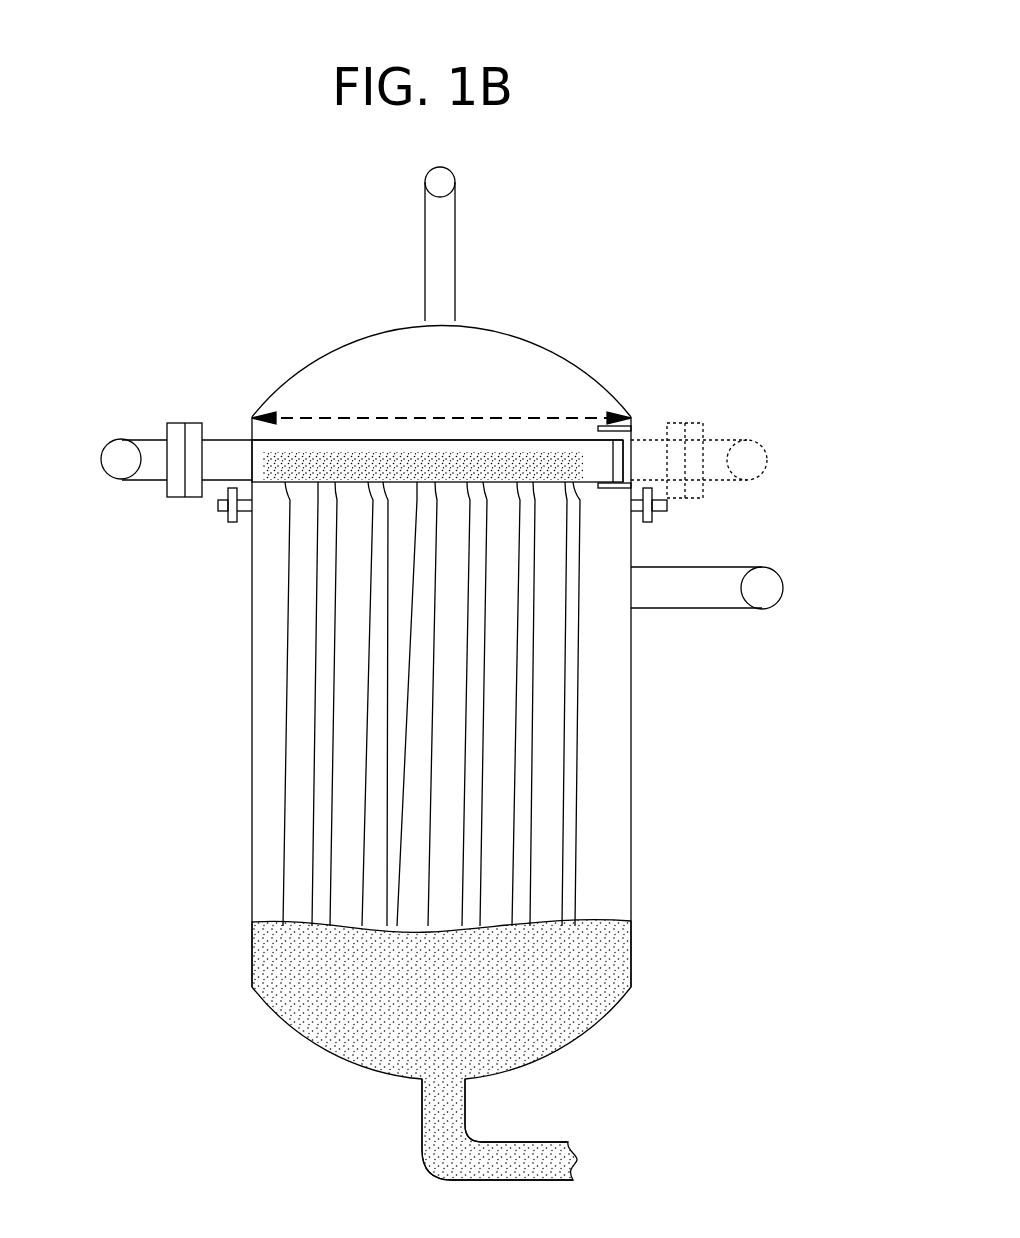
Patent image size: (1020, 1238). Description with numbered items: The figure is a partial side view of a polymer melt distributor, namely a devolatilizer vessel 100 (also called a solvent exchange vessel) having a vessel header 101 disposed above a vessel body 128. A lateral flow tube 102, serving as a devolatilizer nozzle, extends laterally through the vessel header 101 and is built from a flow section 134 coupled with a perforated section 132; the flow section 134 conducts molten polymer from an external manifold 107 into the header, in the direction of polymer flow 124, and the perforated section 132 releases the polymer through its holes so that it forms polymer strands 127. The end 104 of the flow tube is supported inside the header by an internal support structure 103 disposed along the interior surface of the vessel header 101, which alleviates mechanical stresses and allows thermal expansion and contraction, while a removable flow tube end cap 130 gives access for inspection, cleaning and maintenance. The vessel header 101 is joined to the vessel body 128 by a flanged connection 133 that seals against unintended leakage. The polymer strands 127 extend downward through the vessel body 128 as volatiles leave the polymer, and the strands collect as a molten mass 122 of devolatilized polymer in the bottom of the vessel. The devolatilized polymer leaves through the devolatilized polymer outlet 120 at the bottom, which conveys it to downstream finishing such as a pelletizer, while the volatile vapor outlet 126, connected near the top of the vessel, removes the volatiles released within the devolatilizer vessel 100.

The devolatilizer vessel 100 is at (740, 241).
The vessel header 101 is at (487, 325).
The lateral flow tubes 102 is at (305, 440).
The internal support structure 103 is at (622, 460).
The end of the flow tube 104 is at (538, 450).
The external manifold 107 is at (110, 485).
The devolatilized polymer outlet 120 is at (465, 1130).
The molten mass of devolatilized polymer 122 is at (335, 1025).
The direction of polymer flow 124 is at (458, 417).
The volatile vapor outlet 126 is at (451, 174).
The polymer strands 127 is at (360, 772).
The vessel body 128 is at (250, 660).
The flow tube end cap 130 is at (637, 427).
The perforated section 132 is at (465, 463).
The flanged connection 133 is at (217, 510).
The flow section 134 is at (225, 462).